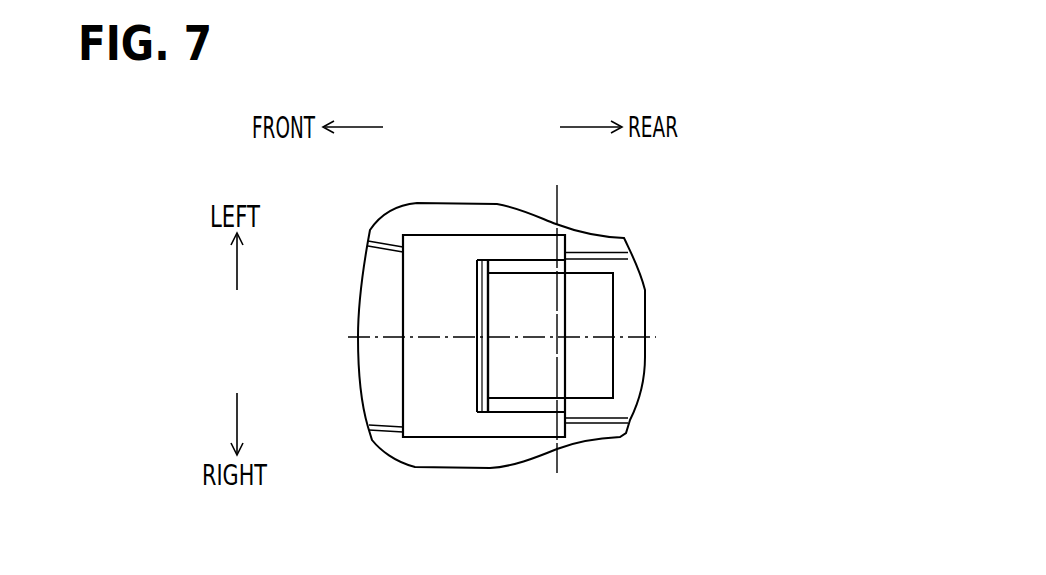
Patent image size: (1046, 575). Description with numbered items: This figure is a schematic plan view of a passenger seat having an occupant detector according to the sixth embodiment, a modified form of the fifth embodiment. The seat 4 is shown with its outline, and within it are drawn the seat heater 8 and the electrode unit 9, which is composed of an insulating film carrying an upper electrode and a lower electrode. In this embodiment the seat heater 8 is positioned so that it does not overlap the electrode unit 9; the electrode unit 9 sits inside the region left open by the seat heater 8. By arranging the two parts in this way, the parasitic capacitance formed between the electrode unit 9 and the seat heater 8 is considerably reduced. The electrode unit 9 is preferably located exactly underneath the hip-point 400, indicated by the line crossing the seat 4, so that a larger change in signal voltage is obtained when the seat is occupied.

The seat 4 is at (628, 395).
The seat heater 8 is at (453, 312).
The electrode unit 9 is at (595, 353).
The hip-point 400 is at (557, 337).